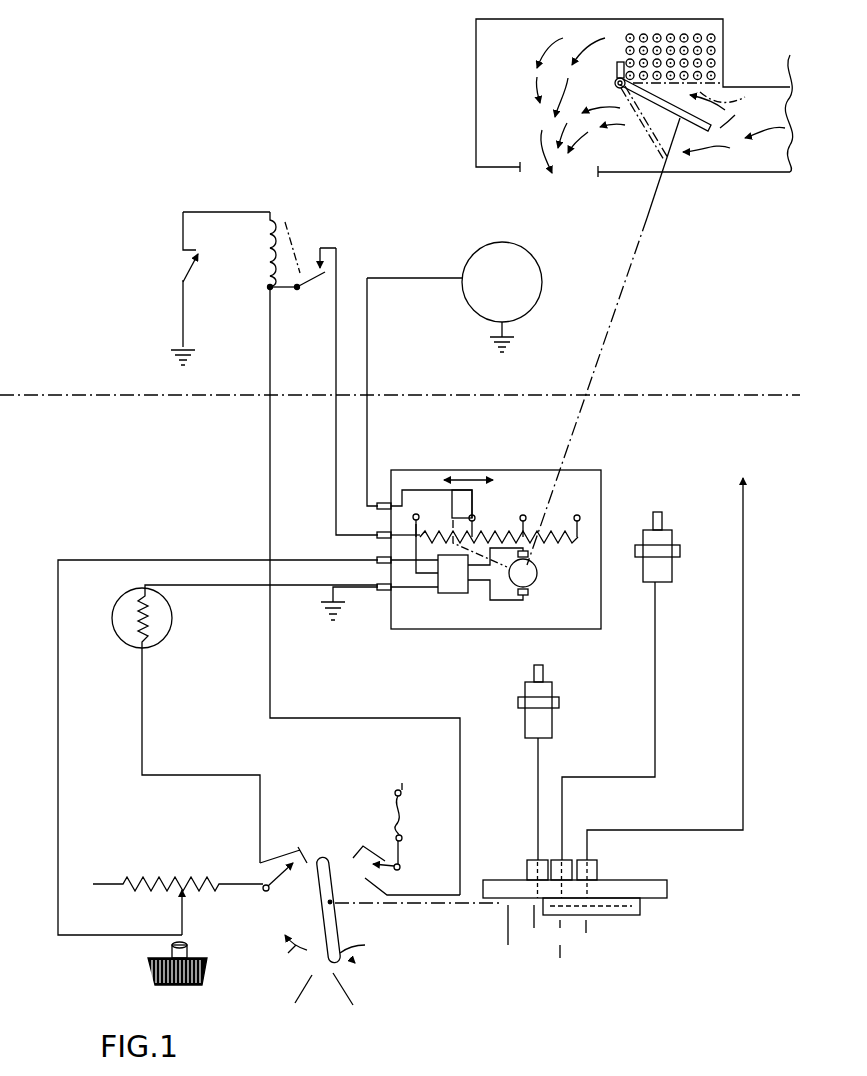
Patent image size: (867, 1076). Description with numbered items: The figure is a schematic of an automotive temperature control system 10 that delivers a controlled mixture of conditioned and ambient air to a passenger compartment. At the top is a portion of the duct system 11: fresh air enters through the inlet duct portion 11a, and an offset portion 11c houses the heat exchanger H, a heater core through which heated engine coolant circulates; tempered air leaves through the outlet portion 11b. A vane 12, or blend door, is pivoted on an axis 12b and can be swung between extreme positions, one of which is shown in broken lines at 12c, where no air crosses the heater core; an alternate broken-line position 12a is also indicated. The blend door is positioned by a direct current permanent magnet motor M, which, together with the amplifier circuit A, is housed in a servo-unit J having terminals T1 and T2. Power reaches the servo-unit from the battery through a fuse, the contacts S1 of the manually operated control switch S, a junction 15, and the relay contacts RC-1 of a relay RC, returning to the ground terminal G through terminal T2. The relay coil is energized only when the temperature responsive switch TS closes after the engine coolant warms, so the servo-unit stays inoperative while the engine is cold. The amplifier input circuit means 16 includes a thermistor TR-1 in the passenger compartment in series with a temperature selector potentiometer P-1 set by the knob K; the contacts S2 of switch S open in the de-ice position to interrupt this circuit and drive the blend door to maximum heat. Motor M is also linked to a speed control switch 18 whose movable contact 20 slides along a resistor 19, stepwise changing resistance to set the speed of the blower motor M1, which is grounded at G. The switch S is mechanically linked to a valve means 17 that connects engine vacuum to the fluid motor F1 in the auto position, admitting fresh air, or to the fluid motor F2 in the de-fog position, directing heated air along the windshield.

The automotive temperature control system 10 is at (170, 210).
The duct system 11 is at (465, 63).
The inlet duct portion 11a is at (790, 104).
The outlet portion 11b is at (540, 157).
The offset portion 11c is at (496, 49).
The vane 12 is at (645, 322).
The flap alternate position 12a is at (655, 152).
The axis 12b is at (600, 77).
The extreme position 12c is at (732, 78).
The heat exchanger H is at (722, 46).
The temperature responsive switch TS is at (190, 265).
The relay RC is at (272, 218).
The junction 15 is at (268, 288).
The relay contacts RC-1 is at (316, 281).
The ground terminal G is at (186, 352).
The blower motor M1 is at (502, 282).
The input circuit means 16 is at (140, 554).
The thermistor TR-1 is at (112, 628).
The terminal T1 is at (378, 534).
The terminal T2 is at (380, 590).
The speed control switch 18 is at (478, 503).
The resistor 19 is at (443, 532).
The movable contact 20 is at (472, 506).
The motor M is at (536, 573).
The amplifier circuit A is at (460, 600).
The servo-unit J is at (440, 630).
The fluid motor F1 is at (668, 575).
The fluid motor F2 is at (553, 722).
The valve means 17 is at (626, 925).
The control switch S is at (333, 928).
The contacts S1 is at (375, 852).
The contacts S2 is at (290, 857).
The temperature selector potentiometer P-1 is at (178, 878).
The knob K is at (150, 975).